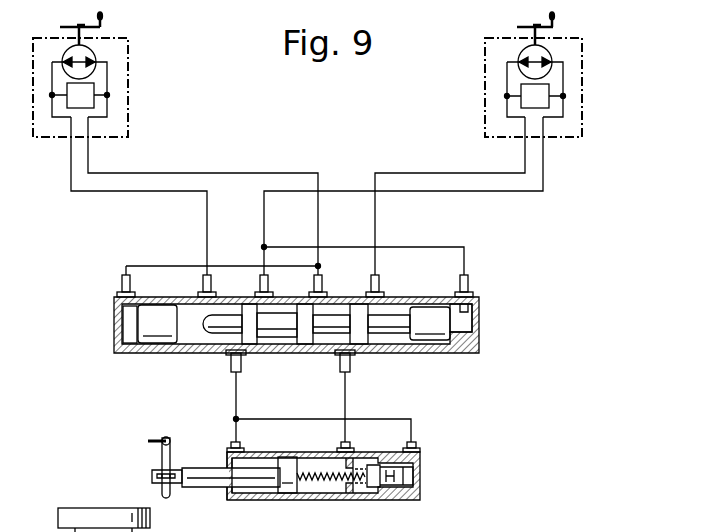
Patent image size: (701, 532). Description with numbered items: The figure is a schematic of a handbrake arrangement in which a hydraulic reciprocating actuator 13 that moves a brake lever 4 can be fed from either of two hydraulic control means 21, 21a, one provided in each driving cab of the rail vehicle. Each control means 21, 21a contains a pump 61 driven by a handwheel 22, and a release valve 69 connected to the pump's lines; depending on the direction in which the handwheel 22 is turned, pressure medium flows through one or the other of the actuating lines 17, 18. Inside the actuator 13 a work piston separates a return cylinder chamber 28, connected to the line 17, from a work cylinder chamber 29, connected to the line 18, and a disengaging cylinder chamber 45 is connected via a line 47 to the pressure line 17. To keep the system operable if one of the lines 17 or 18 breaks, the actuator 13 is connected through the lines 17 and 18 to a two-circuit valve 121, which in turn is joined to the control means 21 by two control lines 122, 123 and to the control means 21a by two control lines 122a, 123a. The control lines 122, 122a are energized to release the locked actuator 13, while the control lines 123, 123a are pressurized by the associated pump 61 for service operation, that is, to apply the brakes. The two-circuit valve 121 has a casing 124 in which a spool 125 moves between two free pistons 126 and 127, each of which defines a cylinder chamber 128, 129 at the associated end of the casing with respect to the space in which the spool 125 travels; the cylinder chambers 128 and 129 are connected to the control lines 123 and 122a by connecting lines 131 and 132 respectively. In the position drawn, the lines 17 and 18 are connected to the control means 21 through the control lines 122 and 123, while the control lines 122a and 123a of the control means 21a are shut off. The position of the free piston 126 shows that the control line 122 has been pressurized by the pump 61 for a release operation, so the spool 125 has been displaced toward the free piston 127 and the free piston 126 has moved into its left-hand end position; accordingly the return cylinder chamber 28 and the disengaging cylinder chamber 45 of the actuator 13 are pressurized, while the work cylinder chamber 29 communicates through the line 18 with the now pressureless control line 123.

The brake lever 4 is at (163, 458).
The hydraulic reciprocating actuator 13 is at (443, 462).
The actuating line 17 is at (233, 404).
The actuating line 18 is at (343, 400).
The hydraulic control means 21 is at (130, 127).
The hydraulic control means 21a is at (582, 127).
The handwheel 22 is at (103, 20).
The return cylinder chamber 28 is at (253, 492).
The work cylinder chamber 29 is at (318, 490).
The disengaging cylinder chamber 45 is at (412, 477).
The line 47 is at (380, 416).
The pump 61 is at (89, 50).
The release valve 69 is at (89, 91).
The two-circuit valve 121 is at (502, 310).
The control line 122 is at (139, 198).
The control line 122a is at (455, 192).
The control line 123 is at (219, 172).
The control line 123a is at (416, 172).
The casing 124 is at (212, 348).
The spool 125 is at (306, 336).
The free piston 126 is at (158, 338).
The free piston 127 is at (430, 334).
The cylinder chamber 128 is at (128, 332).
The cylinder chamber 129 is at (465, 327).
The connecting line 131 is at (156, 265).
The connecting line 132 is at (408, 246).